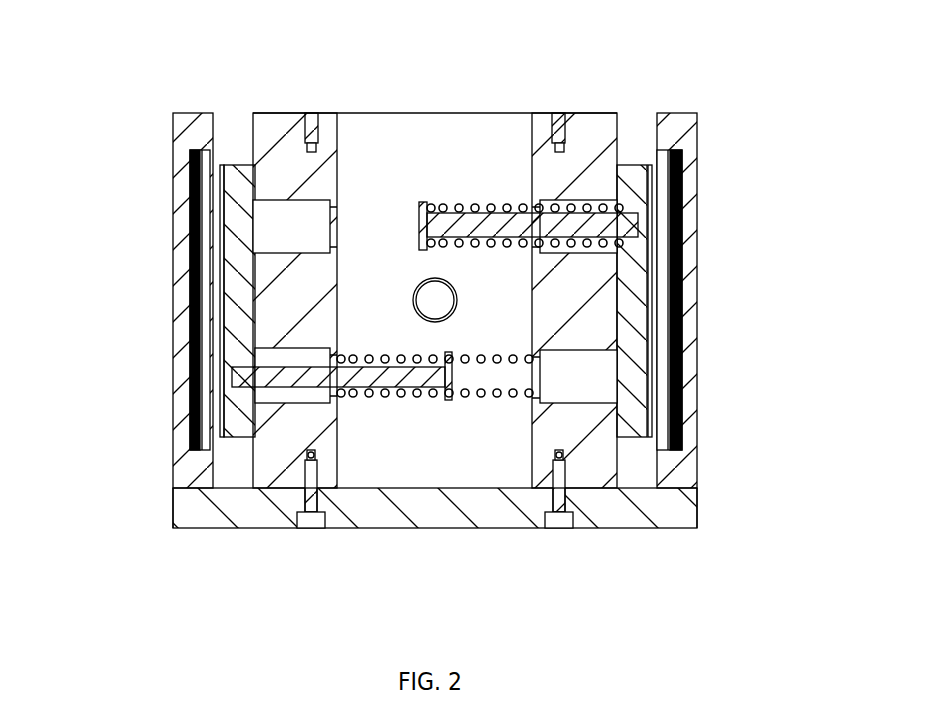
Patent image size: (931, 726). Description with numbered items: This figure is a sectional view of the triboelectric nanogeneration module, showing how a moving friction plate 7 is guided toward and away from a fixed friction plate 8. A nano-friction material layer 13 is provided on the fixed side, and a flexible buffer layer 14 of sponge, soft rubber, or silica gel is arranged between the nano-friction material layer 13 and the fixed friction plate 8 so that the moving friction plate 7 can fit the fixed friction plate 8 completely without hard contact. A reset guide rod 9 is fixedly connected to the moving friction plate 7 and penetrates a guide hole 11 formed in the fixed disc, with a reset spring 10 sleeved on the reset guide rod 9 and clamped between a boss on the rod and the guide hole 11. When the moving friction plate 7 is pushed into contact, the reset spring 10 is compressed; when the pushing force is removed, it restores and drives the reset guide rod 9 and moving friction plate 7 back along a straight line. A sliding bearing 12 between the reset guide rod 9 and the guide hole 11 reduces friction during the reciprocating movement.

The moving friction plate 7 is at (157, 291).
The fixed friction plate 8 is at (378, 255).
The reset guide rod 9 is at (435, 206).
The reset spring 10 is at (480, 204).
The guide hole 11 is at (575, 383).
The sliding bearing 12 is at (522, 238).
The nano-friction material layer 13 is at (221, 437).
The flexible buffer layer 14 is at (371, 386).